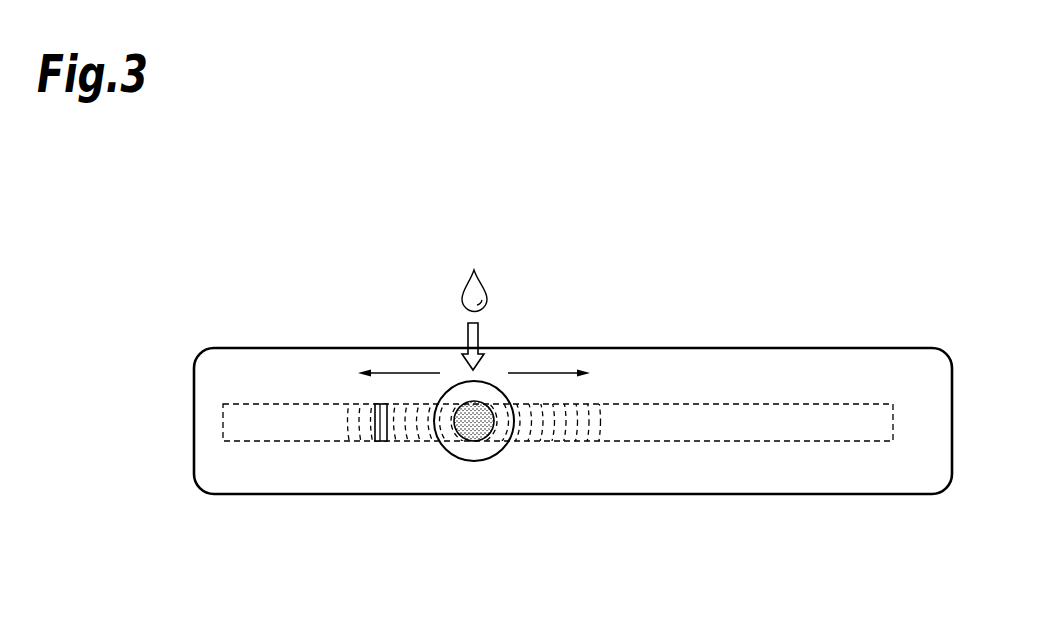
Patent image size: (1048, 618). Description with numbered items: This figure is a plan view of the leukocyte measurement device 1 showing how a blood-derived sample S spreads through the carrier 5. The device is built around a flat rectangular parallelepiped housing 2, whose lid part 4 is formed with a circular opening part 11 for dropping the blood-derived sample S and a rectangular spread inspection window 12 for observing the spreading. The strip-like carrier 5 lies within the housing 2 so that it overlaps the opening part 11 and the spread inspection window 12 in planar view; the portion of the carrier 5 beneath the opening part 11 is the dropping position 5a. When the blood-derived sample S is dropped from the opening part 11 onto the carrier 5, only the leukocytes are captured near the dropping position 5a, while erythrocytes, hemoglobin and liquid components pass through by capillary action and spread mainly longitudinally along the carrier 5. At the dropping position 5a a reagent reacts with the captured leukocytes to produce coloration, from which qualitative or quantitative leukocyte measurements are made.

The leukocyte measurement device 1 is at (184, 324).
The housing 2 is at (772, 347).
The lid part 4 is at (920, 424).
The carrier 5 is at (773, 441).
The dropping position 5a is at (466, 409).
The opening part 11 is at (458, 450).
The spread inspection window 12 is at (381, 441).
The blood-derived sample S is at (466, 290).